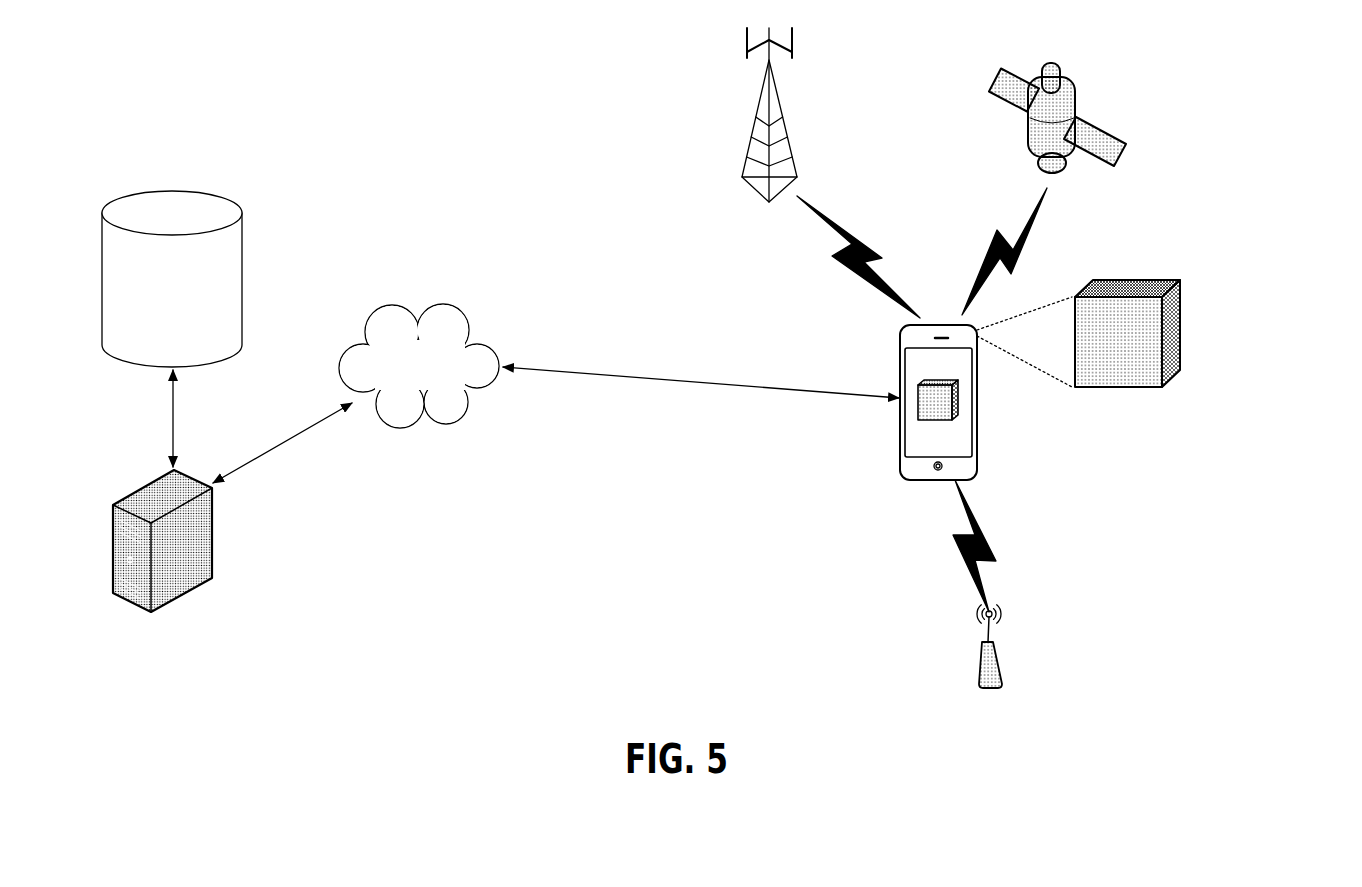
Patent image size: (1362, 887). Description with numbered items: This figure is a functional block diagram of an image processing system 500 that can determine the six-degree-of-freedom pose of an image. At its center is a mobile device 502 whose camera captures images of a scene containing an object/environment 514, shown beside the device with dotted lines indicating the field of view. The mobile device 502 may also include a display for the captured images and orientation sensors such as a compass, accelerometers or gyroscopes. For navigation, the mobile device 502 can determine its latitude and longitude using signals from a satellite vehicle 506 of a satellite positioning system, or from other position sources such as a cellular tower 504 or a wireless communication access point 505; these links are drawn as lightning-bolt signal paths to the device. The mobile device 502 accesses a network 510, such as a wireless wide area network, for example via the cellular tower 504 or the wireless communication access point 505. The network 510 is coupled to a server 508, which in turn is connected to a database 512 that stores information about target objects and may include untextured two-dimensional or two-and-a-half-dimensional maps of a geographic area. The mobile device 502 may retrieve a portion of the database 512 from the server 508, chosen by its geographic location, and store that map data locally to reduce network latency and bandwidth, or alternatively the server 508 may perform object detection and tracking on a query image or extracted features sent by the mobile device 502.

The image processing system 500 is at (1303, 87).
The mobile device 502 is at (900, 446).
The cellular tower 504 is at (765, 200).
The wireless communication access point 505 is at (1002, 655).
The satellite vehicle 506 is at (1027, 143).
The server 508 is at (130, 495).
The network 510 is at (434, 392).
The database 512 is at (172, 208).
The object/environment 514 is at (1146, 368).